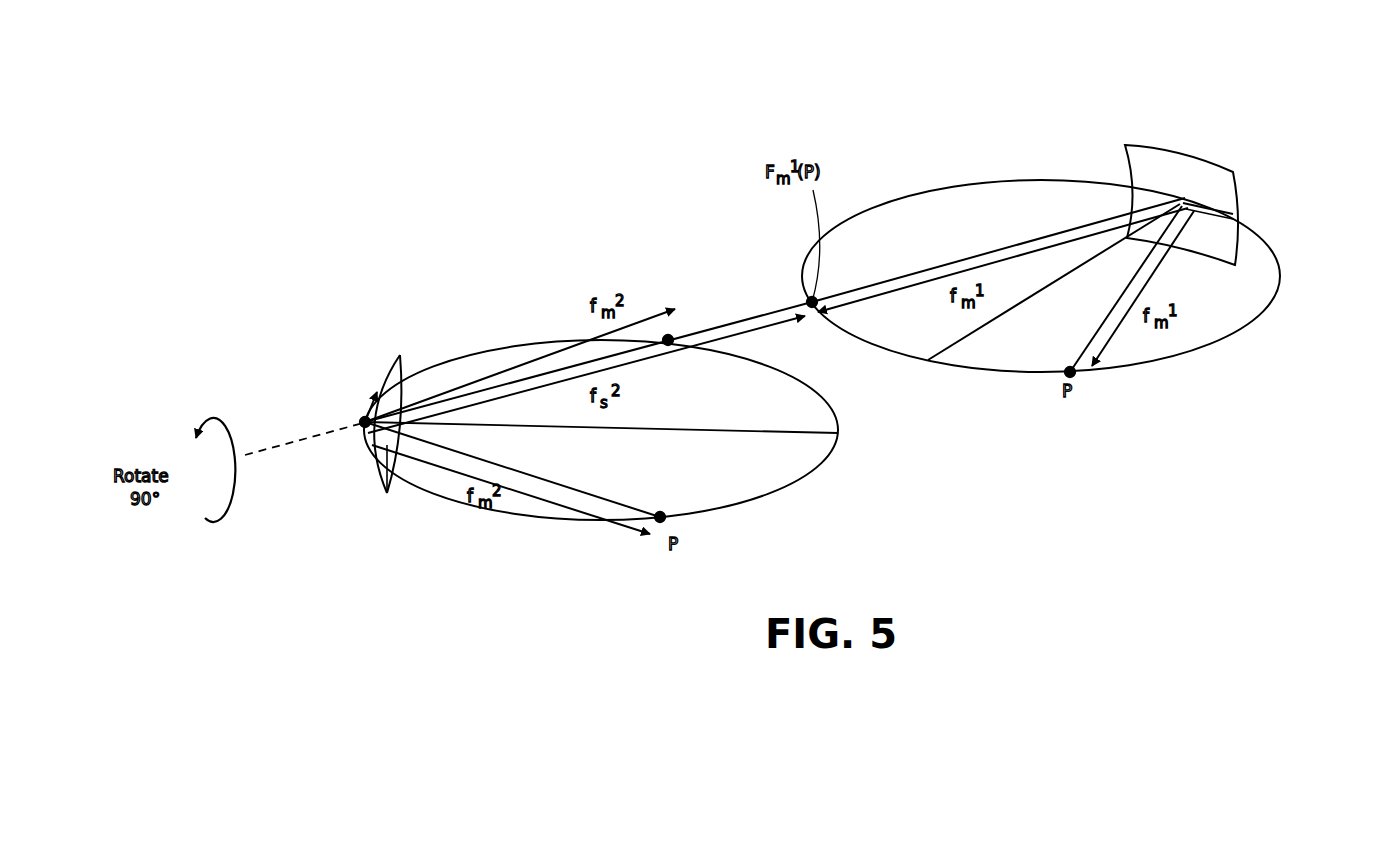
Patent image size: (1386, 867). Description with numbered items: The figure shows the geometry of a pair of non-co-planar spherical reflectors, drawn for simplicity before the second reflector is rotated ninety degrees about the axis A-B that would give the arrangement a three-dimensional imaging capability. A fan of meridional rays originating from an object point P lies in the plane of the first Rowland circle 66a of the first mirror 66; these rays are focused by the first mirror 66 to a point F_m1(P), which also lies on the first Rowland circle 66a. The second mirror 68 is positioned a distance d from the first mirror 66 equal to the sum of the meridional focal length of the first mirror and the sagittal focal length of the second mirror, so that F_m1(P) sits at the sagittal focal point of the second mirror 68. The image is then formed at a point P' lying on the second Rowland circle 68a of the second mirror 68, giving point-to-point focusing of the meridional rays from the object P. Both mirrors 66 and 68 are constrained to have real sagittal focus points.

The first mirror 66 is at (1238, 181).
The first Rowland circle 66a is at (940, 190).
The second mirror 68 is at (380, 368).
The second Rowland circle 68a is at (497, 343).